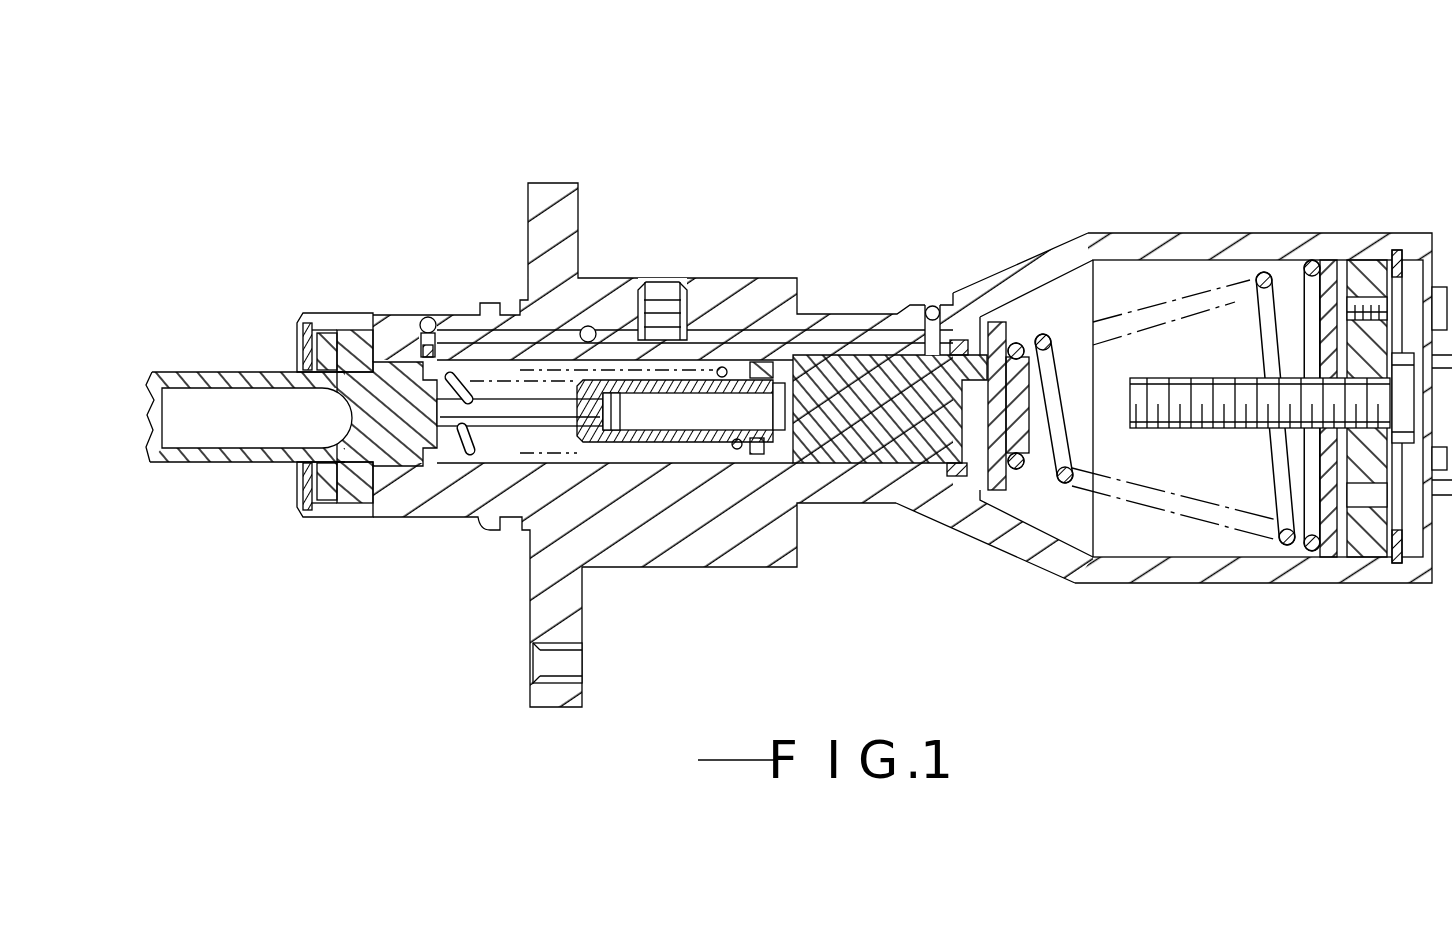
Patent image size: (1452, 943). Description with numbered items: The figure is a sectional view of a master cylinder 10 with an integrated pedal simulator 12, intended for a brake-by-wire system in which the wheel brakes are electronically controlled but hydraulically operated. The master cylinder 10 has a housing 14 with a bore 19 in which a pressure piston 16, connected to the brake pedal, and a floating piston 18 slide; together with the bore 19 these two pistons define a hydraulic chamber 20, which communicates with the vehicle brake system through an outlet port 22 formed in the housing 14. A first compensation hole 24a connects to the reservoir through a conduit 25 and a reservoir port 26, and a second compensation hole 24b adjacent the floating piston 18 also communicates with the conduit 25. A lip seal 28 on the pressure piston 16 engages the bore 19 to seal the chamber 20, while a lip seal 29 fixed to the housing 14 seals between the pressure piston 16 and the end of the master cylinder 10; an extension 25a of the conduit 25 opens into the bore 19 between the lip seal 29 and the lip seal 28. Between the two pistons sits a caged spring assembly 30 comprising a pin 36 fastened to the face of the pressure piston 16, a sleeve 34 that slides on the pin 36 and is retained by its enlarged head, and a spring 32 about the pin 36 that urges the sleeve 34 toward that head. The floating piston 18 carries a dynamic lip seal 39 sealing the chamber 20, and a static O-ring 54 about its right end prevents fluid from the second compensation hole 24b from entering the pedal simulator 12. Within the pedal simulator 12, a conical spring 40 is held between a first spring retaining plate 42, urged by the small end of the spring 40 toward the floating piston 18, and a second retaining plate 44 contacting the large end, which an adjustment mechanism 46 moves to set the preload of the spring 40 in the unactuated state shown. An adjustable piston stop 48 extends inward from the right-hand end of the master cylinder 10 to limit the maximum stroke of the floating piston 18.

The master cylinder 10 is at (670, 100).
The pedal simulator 12 is at (1258, 600).
The housing 14 is at (617, 555).
The pressure piston 16 is at (219, 425).
The floating piston 18 is at (870, 450).
The bore 19 is at (456, 450).
The hydraulic chamber 20 is at (517, 433).
The outlet port 22 is at (756, 343).
The first compensation hole 24a is at (410, 330).
The second compensation hole 24b is at (926, 312).
The conduit 25 is at (587, 333).
The extension 25a is at (380, 335).
The reservoir port 26 is at (663, 278).
The lip seal 28 is at (405, 335).
The lip seal 29 is at (388, 500).
The caged spring assembly 30 is at (587, 458).
The spring 32 is at (515, 365).
The sleeve 34 is at (695, 445).
The pin 36 is at (477, 407).
The lip seal 39 is at (757, 456).
The conical spring 40 is at (1262, 277).
The first spring retaining plate 42 is at (1000, 492).
The second retaining plate 44 is at (1300, 298).
The adjustment mechanism 46 is at (1367, 560).
The adjustable piston stop 48 is at (1158, 432).
The O-ring 54 is at (962, 338).